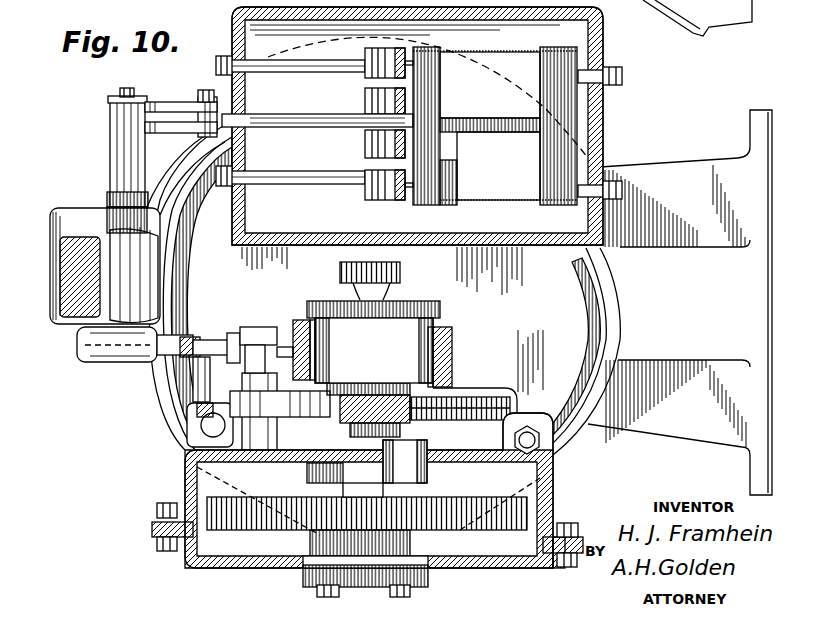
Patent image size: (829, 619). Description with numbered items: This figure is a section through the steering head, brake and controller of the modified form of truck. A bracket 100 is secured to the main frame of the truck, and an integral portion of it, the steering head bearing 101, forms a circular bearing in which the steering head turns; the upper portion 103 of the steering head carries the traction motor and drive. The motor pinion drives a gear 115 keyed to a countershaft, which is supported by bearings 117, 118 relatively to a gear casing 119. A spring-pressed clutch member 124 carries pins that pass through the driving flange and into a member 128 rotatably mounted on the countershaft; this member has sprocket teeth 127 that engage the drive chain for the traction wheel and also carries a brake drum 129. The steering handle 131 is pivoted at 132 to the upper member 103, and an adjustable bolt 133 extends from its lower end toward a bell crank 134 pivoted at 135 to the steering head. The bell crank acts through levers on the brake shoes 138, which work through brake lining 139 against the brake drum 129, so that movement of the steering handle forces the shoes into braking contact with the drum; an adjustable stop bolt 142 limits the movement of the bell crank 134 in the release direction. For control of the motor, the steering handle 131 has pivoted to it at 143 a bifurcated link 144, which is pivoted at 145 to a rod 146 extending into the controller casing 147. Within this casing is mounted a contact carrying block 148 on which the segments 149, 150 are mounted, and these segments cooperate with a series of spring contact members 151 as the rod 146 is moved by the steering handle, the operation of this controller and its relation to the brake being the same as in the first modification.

The bracket 100 is at (648, 247).
The steering head bearing 101 is at (152, 393).
The upper portion of steering head 103 is at (562, 283).
The gear 115 is at (527, 515).
The bearing 117 is at (430, 555).
The bearing 118 is at (425, 480).
The gear casing 119 is at (190, 478).
The clutch member 124 is at (402, 272).
The sprocket teeth 127 is at (455, 376).
The member 128 is at (440, 303).
The brake drum 129 is at (388, 360).
The steering handle 131 is at (58, 305).
The pivot 132 is at (62, 208).
The adjustable bolt 133 is at (186, 333).
The bell crank 134 is at (258, 327).
The pivot 135 is at (187, 370).
The brake shoes 138 is at (296, 320).
The brake lining 139 is at (311, 320).
The adjustable stop bolt 142 is at (230, 333).
The pivot 143 is at (127, 88).
The bifurcated link 144 is at (162, 128).
The pivot 145 is at (205, 90).
The rod 146 is at (307, 120).
The controller casing 147 is at (478, 12).
The contact carrying block 148 is at (577, 48).
The segment 149 is at (490, 108).
The segment 150 is at (508, 164).
The spring contact members 151 is at (365, 72).